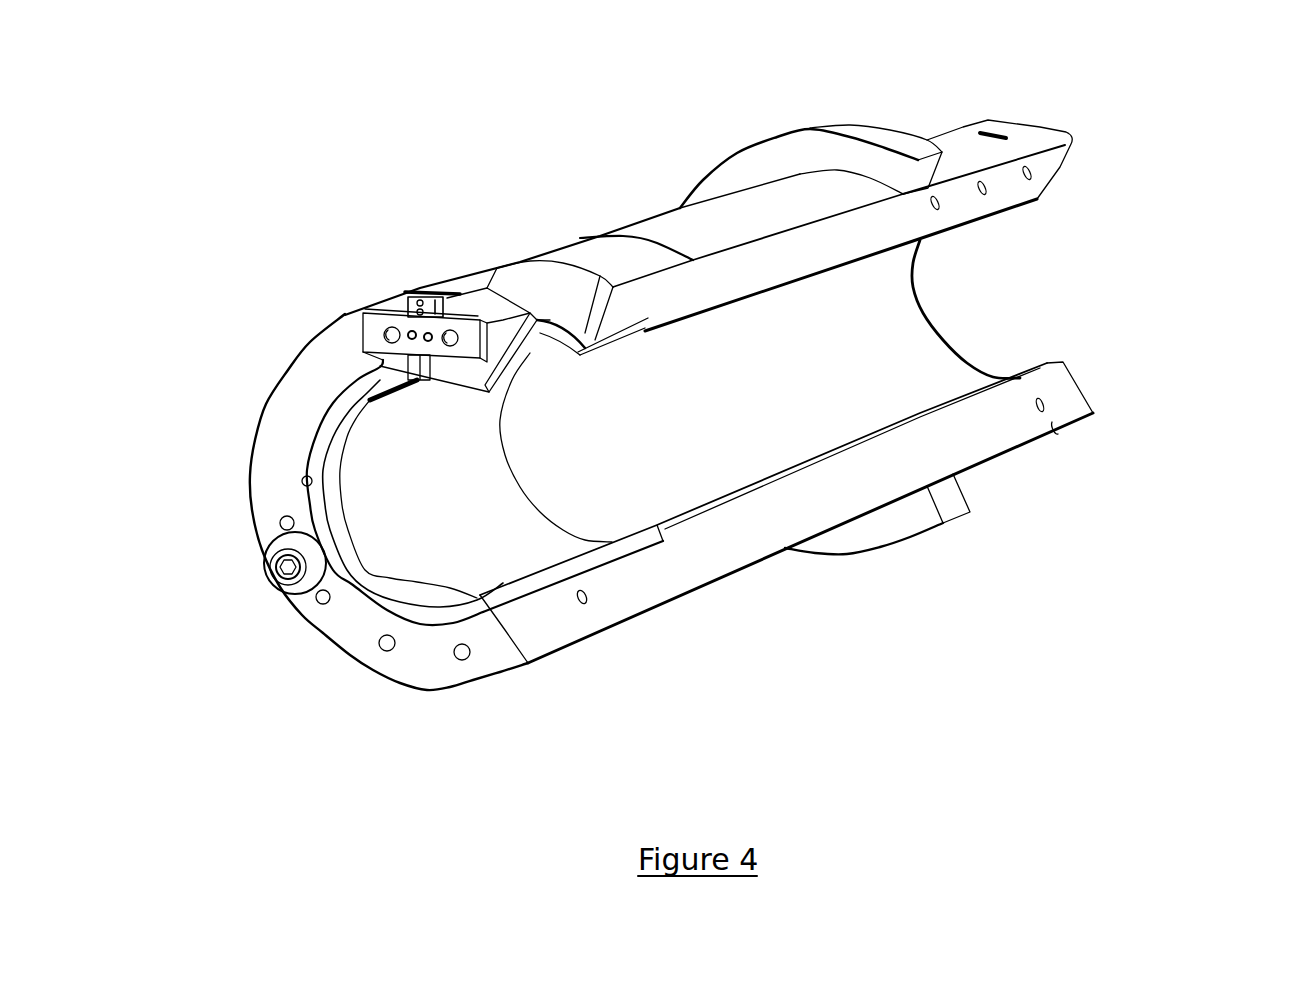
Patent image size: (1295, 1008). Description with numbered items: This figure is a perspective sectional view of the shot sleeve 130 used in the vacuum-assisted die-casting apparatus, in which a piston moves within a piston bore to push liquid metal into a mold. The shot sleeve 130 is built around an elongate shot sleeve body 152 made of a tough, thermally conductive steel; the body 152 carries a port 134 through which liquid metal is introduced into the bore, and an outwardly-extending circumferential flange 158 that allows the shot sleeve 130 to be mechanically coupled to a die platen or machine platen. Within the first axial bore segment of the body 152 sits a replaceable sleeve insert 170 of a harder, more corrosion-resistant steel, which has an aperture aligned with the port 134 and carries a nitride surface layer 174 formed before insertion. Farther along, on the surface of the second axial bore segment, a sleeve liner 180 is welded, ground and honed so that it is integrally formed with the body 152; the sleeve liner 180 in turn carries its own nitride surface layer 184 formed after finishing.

The shot sleeve 130 is at (1183, 100).
The port 134 is at (522, 287).
The shot sleeve body 152 is at (732, 536).
The circumferential flange 158 is at (878, 134).
The sleeve insert 170 is at (583, 566).
The nitride surface layer 174 is at (378, 441).
The sleeve liner 180 is at (960, 405).
The nitride surface layer 184 is at (850, 344).